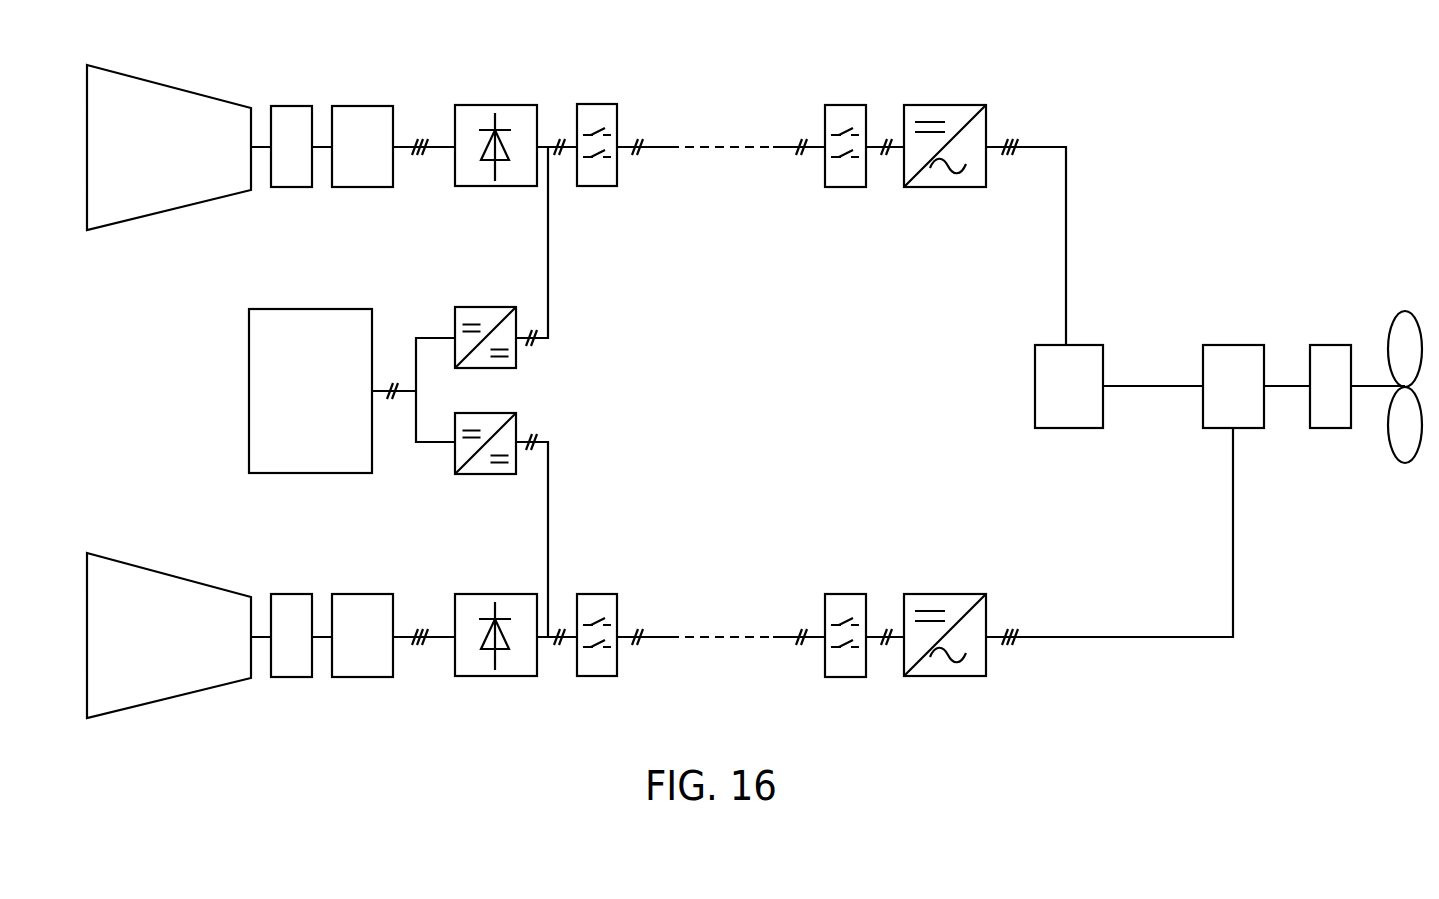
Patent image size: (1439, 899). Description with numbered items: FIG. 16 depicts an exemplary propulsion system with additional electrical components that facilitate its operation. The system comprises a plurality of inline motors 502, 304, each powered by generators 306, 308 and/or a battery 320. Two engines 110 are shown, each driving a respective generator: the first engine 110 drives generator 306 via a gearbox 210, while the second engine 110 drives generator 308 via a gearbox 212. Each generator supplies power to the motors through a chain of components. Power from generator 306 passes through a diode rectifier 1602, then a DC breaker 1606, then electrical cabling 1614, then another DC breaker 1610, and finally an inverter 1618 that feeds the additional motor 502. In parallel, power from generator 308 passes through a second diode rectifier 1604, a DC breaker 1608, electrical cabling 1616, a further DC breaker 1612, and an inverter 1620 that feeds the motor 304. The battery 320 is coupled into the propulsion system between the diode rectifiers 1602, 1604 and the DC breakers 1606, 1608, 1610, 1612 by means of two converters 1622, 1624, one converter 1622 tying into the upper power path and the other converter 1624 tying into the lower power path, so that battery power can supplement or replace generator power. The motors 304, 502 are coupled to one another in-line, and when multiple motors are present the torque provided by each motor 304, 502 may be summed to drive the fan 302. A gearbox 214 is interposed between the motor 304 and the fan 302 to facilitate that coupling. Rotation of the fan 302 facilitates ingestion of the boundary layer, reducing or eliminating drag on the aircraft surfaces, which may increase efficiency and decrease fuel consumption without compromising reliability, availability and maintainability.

The engine 110 is at (167, 84).
The gearbox 210 is at (290, 105).
The generator 306 is at (360, 105).
The diode rectifier 1602 is at (495, 104).
The DC breaker 1606 is at (597, 103).
The electrical cabling 1614 is at (715, 146).
The DC breaker 1610 is at (842, 104).
The inverter 1618 is at (943, 104).
The battery 320 is at (310, 308).
The converter 1622 is at (482, 306).
The converter 1624 is at (483, 475).
The additional motor 502 is at (1092, 344).
The motor 304 is at (1234, 344).
The gearbox 214 is at (1332, 344).
The fan 302 is at (1403, 311).
The gearbox 212 is at (290, 593).
The generator 308 is at (360, 593).
The diode rectifier 1604 is at (495, 678).
The DC breaker 1608 is at (597, 593).
The electrical cabling 1616 is at (715, 636).
The DC breaker 1612 is at (842, 593).
The inverter 1620 is at (943, 593).